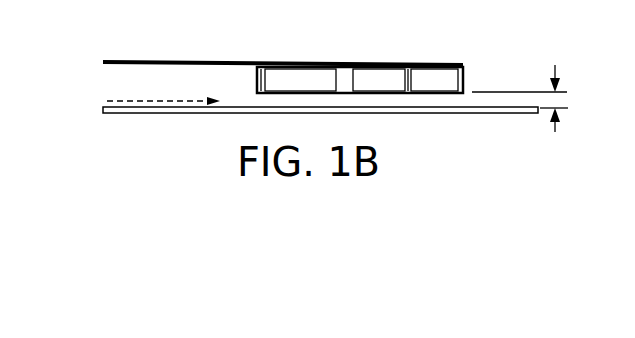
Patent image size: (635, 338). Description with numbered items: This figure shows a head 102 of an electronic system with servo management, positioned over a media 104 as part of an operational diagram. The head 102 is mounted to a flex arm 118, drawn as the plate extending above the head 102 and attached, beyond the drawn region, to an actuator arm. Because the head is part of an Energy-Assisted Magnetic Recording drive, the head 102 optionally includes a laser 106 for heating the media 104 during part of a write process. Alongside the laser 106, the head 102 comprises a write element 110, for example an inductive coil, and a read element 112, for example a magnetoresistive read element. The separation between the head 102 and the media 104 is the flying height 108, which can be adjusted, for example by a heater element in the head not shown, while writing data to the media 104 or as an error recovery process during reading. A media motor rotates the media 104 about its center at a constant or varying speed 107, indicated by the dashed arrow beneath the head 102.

The head 102 is at (480, 75).
The media 104 is at (185, 113).
The laser 106 is at (315, 67).
The speed 107 is at (145, 100).
The flying height 108 is at (557, 67).
The write element 110 is at (391, 68).
The read element 112 is at (454, 68).
The flex arm 118 is at (210, 62).